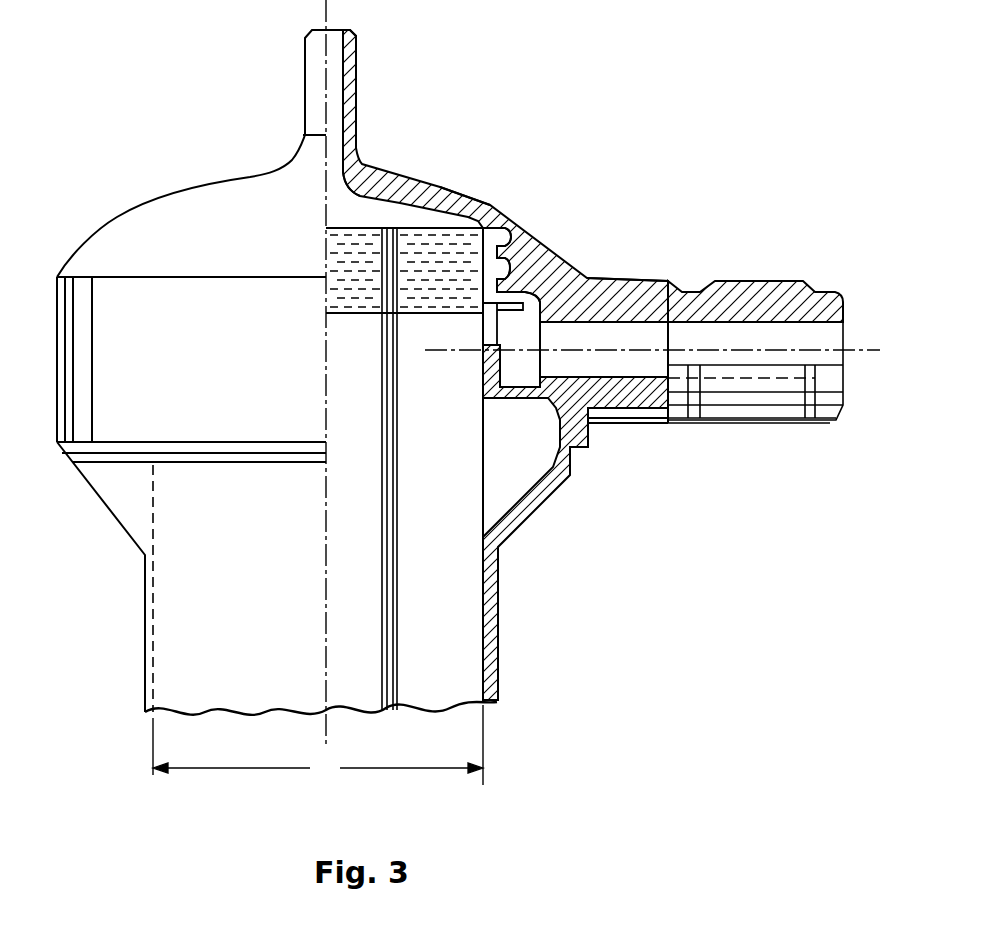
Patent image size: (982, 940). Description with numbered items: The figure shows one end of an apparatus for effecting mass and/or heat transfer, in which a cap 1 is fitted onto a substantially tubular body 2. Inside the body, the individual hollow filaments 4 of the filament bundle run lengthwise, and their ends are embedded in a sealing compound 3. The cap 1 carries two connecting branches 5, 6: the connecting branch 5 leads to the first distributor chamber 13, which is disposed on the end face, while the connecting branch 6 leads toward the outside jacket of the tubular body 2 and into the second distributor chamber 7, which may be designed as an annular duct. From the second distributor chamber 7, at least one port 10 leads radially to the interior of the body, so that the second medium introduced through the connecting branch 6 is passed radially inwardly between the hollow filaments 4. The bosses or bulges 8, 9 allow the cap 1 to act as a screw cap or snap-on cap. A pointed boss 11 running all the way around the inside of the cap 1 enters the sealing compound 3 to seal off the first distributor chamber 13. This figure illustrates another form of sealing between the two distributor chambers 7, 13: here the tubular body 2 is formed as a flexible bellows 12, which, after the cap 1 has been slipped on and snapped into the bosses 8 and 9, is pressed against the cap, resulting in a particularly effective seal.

The cap 1 is at (442, 190).
The substantially tubular body 2 is at (500, 584).
The sealing compound 3 is at (366, 298).
The hollow filaments 4 is at (382, 527).
The connecting branch 5 is at (350, 84).
The connecting branch 6 is at (650, 296).
The second distributor chamber 7 is at (600, 296).
The boss or bulge 8 is at (506, 263).
The boss or bulge 9 is at (586, 421).
The port 10 is at (500, 327).
The pointed boss 11 is at (490, 208).
The bellows 12 is at (528, 298).
The first distributor chamber 13 is at (347, 207).